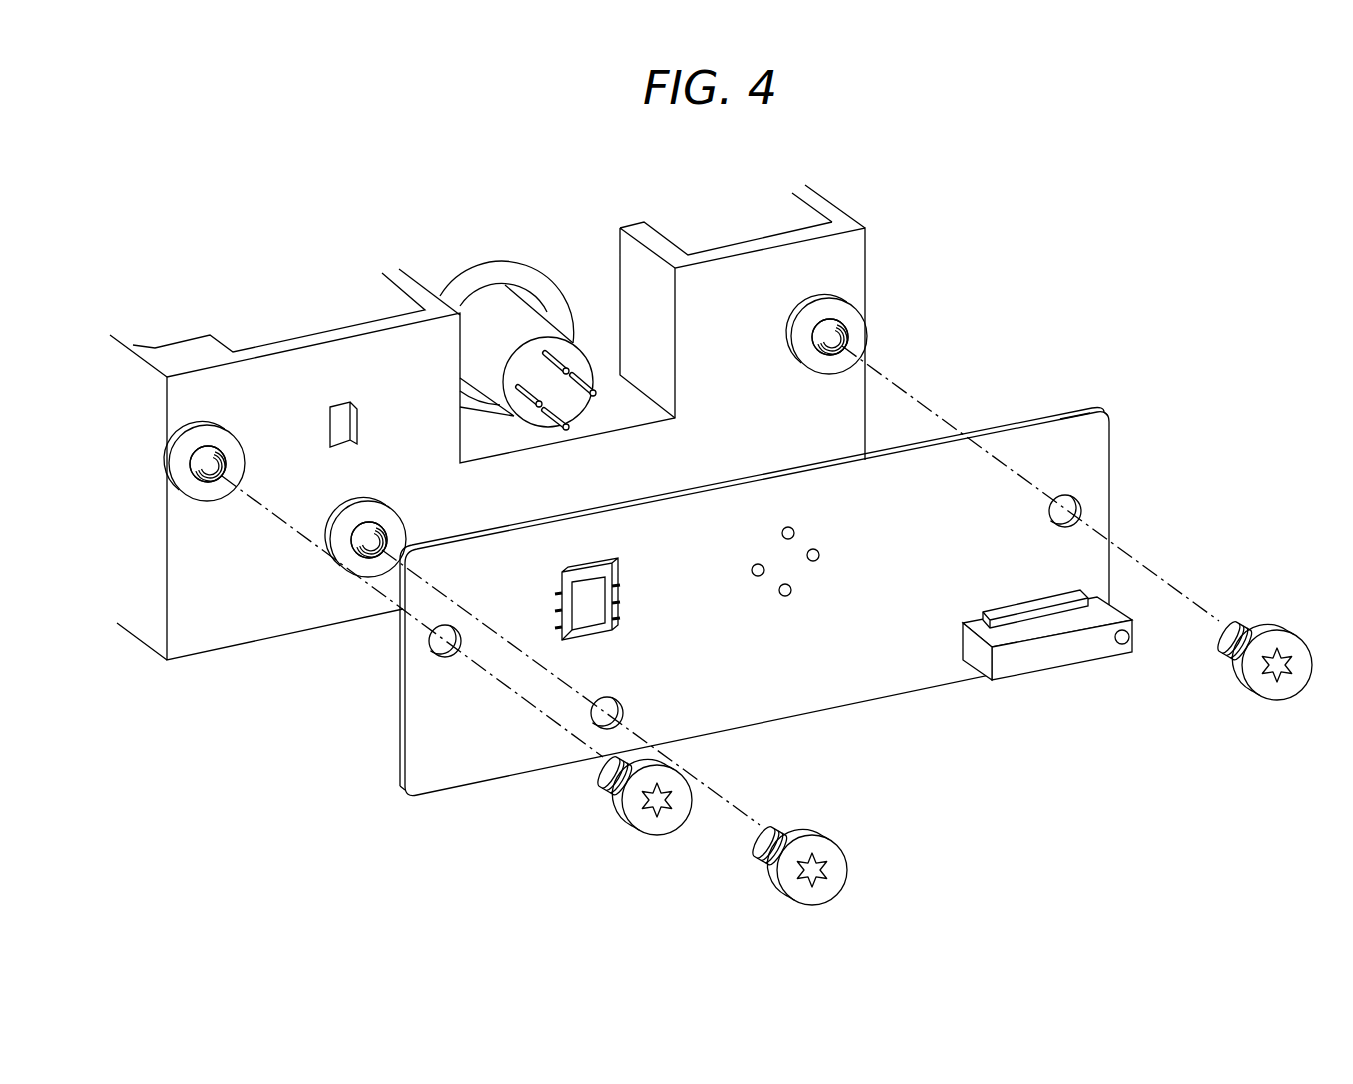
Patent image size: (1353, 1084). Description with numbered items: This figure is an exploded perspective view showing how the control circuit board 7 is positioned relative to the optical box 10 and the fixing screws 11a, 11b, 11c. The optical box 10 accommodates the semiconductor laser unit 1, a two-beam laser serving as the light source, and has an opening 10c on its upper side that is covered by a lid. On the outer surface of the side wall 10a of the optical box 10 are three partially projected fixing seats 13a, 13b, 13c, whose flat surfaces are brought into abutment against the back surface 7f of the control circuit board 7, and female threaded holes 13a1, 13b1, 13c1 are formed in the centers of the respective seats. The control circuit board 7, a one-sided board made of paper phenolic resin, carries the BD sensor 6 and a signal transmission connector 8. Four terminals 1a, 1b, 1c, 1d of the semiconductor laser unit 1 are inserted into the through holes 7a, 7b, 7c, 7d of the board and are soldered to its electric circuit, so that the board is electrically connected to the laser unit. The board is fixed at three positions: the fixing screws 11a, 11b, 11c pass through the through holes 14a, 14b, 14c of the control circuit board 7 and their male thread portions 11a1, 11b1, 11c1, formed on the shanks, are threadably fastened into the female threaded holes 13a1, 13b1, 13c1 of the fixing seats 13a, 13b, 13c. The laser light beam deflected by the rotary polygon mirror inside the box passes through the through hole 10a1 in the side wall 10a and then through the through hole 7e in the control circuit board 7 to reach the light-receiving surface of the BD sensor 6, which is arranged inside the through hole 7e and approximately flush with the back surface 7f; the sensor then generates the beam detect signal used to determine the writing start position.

The semiconductor laser unit 1 is at (518, 312).
The terminal 1a is at (567, 368).
The terminal 1b is at (535, 407).
The terminal 1c is at (566, 431).
The terminal 1d is at (598, 398).
The BD sensor 6 is at (612, 604).
The control circuit board 7 is at (1100, 438).
The through hole 7a is at (788, 527).
The through hole 7b is at (752, 570).
The through hole 7c is at (787, 598).
The through hole 7d is at (820, 556).
The through hole 7e is at (587, 632).
The back surface 7f is at (1047, 411).
The signal transmission connector 8 is at (1050, 655).
The optical box 10 is at (133, 345).
The side wall 10a is at (843, 257).
The through hole 10a1 is at (353, 413).
The opening 10c is at (827, 203).
The fixing screw 11a is at (457, 696).
The male thread portion 11a1 is at (602, 782).
The fixing screw 11b is at (674, 743).
The male thread portion 11b1 is at (763, 855).
The fixing screw 11c is at (1088, 566).
The male thread portion 11c1 is at (1250, 622).
The fixing seat 13a is at (183, 478).
The female threaded hole 13a1 is at (215, 462).
The fixing seat 13b is at (355, 562).
The female threaded hole 13b1 is at (385, 530).
The fixing seat 13c is at (850, 313).
The female threaded hole 13c1 is at (850, 328).
The through hole 14a is at (432, 660).
The through hole 14b is at (622, 716).
The through hole 14c is at (1082, 511).